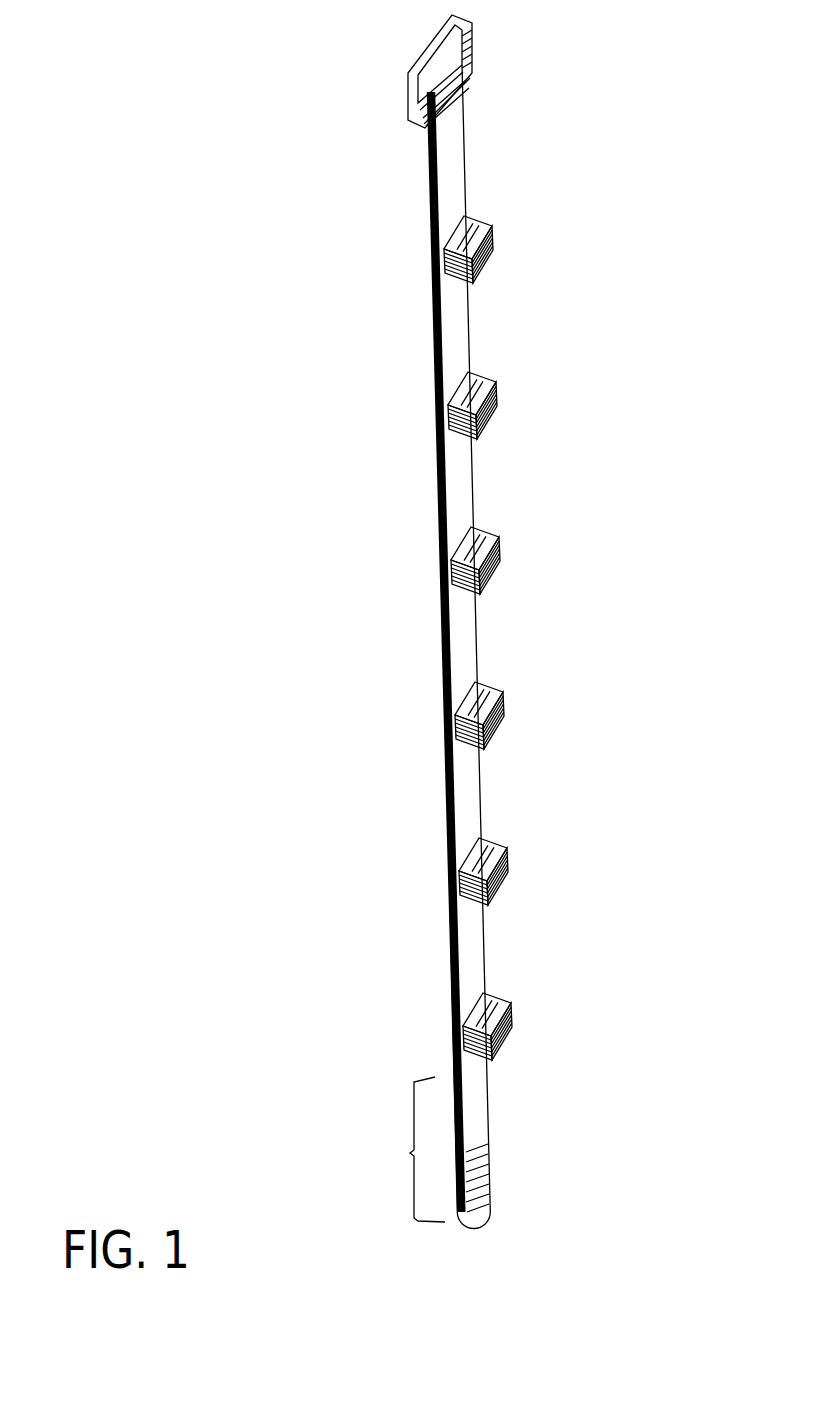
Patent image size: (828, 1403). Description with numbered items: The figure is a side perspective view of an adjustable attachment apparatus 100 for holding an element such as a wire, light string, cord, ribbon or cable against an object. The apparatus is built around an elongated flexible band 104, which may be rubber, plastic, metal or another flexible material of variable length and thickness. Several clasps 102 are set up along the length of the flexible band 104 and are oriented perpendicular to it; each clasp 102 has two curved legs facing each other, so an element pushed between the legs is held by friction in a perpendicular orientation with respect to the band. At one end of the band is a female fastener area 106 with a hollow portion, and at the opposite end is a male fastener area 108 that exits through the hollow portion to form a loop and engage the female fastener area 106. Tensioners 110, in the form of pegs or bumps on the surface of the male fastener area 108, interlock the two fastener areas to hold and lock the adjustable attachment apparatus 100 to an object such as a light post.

The adjustable attachment apparatus 100 is at (216, 85).
The clasp 102 is at (494, 403).
The flexible band 104 is at (467, 630).
The female fastener area 106 is at (472, 73).
The male fastener area 108 is at (410, 1153).
The tensioner 110 is at (489, 1166).